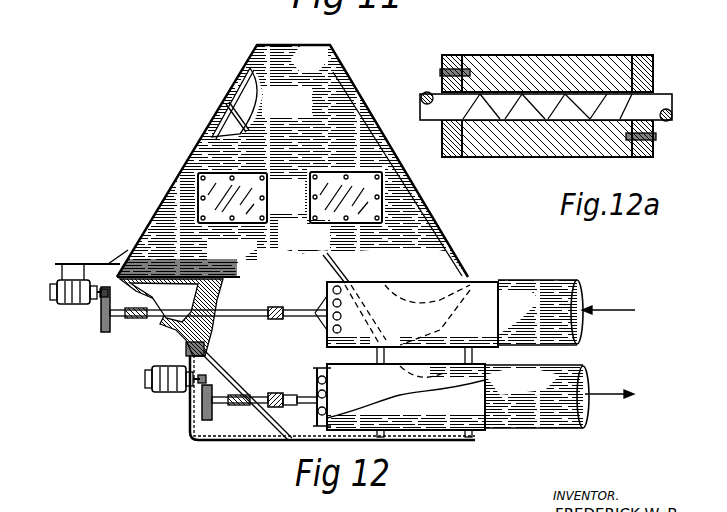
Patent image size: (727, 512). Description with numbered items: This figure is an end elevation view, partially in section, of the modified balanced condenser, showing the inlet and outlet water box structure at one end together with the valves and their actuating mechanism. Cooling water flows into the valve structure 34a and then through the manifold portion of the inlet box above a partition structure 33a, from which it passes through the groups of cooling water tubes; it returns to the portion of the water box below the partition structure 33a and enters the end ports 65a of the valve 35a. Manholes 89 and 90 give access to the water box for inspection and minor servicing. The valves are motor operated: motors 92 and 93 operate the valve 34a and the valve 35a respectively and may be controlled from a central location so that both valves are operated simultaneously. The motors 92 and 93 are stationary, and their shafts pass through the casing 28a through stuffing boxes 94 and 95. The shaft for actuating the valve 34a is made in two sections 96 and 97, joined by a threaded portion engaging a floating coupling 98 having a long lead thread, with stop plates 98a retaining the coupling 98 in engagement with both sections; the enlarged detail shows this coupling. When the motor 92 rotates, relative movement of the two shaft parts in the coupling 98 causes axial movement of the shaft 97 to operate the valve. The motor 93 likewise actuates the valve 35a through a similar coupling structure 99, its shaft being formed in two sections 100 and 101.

In FIG. 12, the casing 28a is at (262, 440).
In FIG. 12, the partition structure 33a is at (259, 103).
In FIG. 12, the valve structure 34a is at (490, 282).
In FIG. 12, the valve 35a is at (514, 422).
In FIG. 12, the end ports 65a is at (328, 393).
In FIG. 12, the manhole 89 is at (248, 198).
In FIG. 12, the manhole 90 is at (313, 223).
In FIG. 12, the motor 92 is at (76, 305).
In FIG. 12, the motor 93 is at (172, 393).
In FIG. 12, the stuffing box 94 is at (134, 320).
In FIG. 12, the stuffing box 95 is at (251, 405).
In FIG. 12, the shaft section 96 is at (262, 310).
In FIG. 12A, the shaft section 96 is at (436, 112).
In FIG. 12, the shaft section 97 is at (306, 318).
In FIG. 12A, the shaft section 97 is at (669, 104).
In FIG. 12, the floating coupling 98 is at (290, 302).
In FIG. 12A, the floating coupling 98 is at (528, 56).
In FIG. 12A, the stop plates 98a is at (450, 153).
In FIG. 12, the coupling structure 99 is at (262, 397).
In FIG. 12, the shaft section 100 is at (280, 407).
In FIG. 12, the shaft section 101 is at (303, 396).